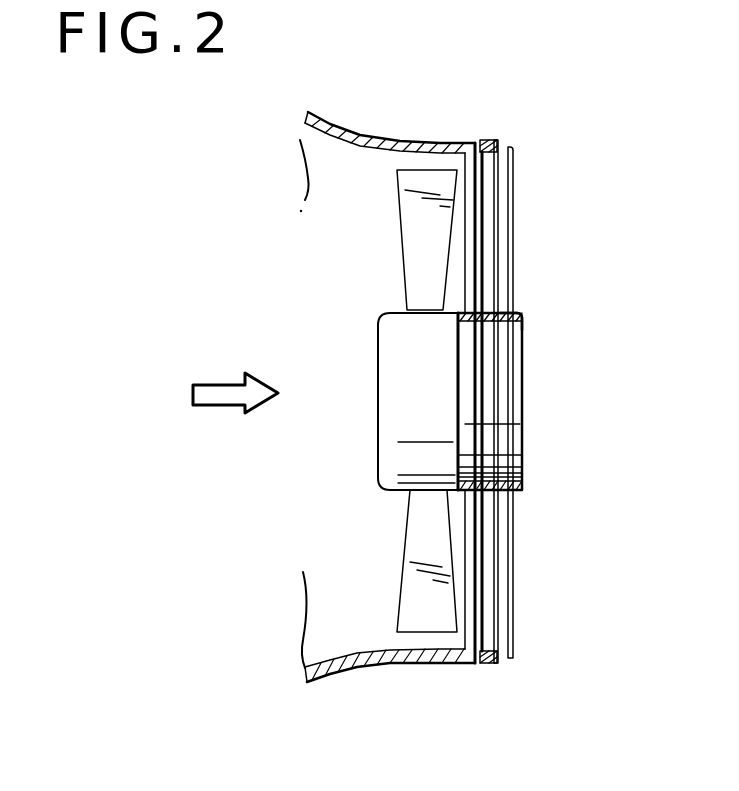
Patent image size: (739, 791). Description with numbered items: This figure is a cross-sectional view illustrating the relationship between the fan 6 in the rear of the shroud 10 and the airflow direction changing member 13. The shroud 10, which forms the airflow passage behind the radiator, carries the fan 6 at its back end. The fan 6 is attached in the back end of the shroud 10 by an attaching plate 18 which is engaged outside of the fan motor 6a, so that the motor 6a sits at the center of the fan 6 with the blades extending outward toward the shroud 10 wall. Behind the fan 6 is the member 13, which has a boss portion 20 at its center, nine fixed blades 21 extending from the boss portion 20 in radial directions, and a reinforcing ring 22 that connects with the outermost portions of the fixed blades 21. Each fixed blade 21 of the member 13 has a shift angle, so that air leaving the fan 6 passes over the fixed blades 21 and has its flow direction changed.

The fan 6 is at (428, 173).
The fan motor 6a is at (500, 411).
The shroud 10 is at (368, 140).
The airflow direction changing member 13 is at (528, 172).
The attaching plate 18 is at (498, 220).
The boss portion 20 is at (507, 318).
The fixed blades 21 is at (513, 287).
The reinforcing ring 22 is at (488, 146).